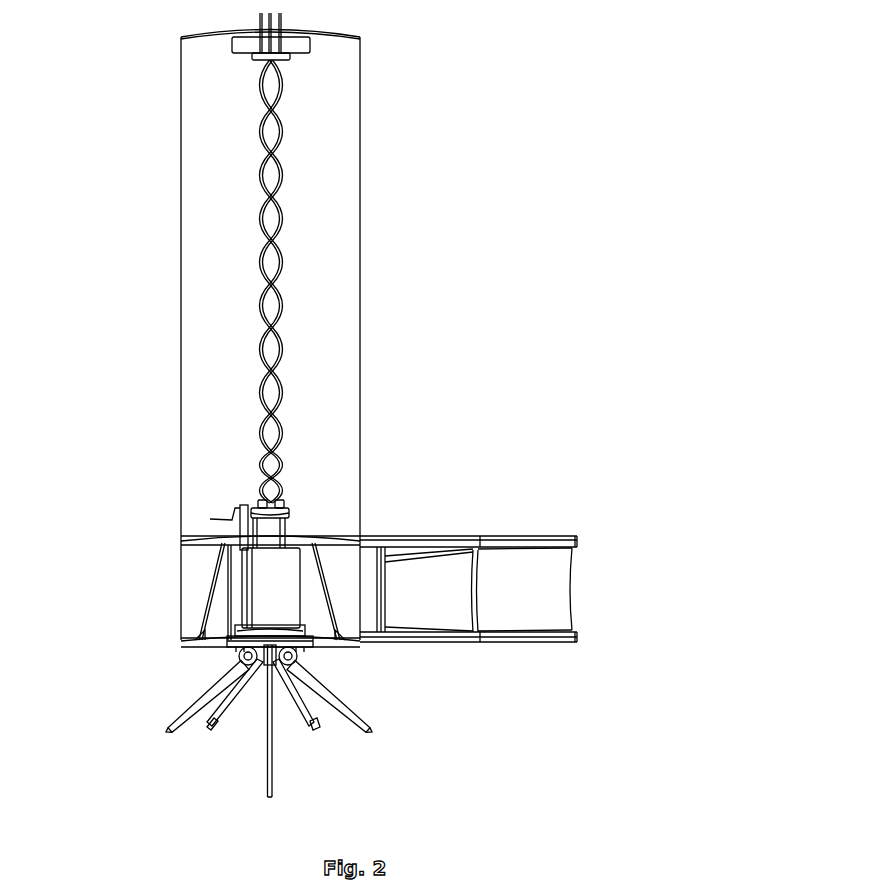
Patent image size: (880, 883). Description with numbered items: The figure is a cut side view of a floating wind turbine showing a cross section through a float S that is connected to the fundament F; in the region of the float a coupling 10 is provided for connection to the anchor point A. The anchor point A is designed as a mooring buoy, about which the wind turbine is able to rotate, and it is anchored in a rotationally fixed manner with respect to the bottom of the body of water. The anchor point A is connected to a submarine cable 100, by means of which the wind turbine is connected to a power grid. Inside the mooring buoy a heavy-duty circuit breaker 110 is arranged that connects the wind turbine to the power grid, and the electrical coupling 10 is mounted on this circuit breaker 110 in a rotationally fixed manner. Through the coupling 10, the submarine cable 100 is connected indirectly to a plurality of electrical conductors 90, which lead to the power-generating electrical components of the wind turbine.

The electrical conductors 90 is at (262, 467).
The coupling 10 is at (300, 512).
The heavy-duty circuit breaker 110 is at (280, 588).
The anchor point A is at (203, 588).
The submarine cable 100 is at (272, 780).
The float S is at (333, 120).
The fundament F is at (528, 604).